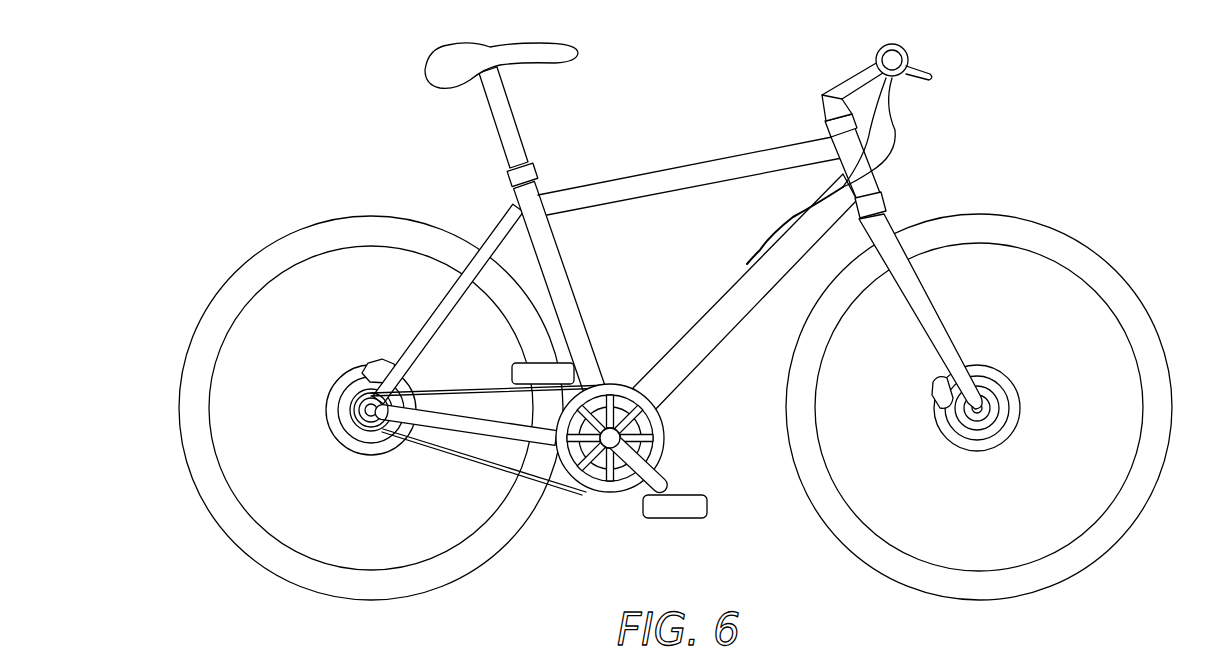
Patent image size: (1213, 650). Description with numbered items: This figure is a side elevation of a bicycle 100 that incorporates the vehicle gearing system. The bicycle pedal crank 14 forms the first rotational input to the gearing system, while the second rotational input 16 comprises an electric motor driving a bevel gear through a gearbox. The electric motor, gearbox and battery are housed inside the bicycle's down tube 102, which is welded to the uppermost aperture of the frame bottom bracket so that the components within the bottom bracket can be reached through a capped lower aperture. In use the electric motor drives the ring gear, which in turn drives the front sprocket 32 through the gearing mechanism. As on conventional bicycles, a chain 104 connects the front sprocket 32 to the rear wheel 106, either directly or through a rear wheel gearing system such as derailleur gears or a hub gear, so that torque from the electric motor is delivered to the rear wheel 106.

The bicycle 100 is at (675, 321).
The down tube 102 is at (629, 311).
The chain 104 is at (456, 453).
The rear wheel 106 is at (270, 253).
The second rotational input 16 is at (750, 276).
The bicycle pedal crank 14 is at (658, 481).
The front sprocket 32 is at (609, 493).